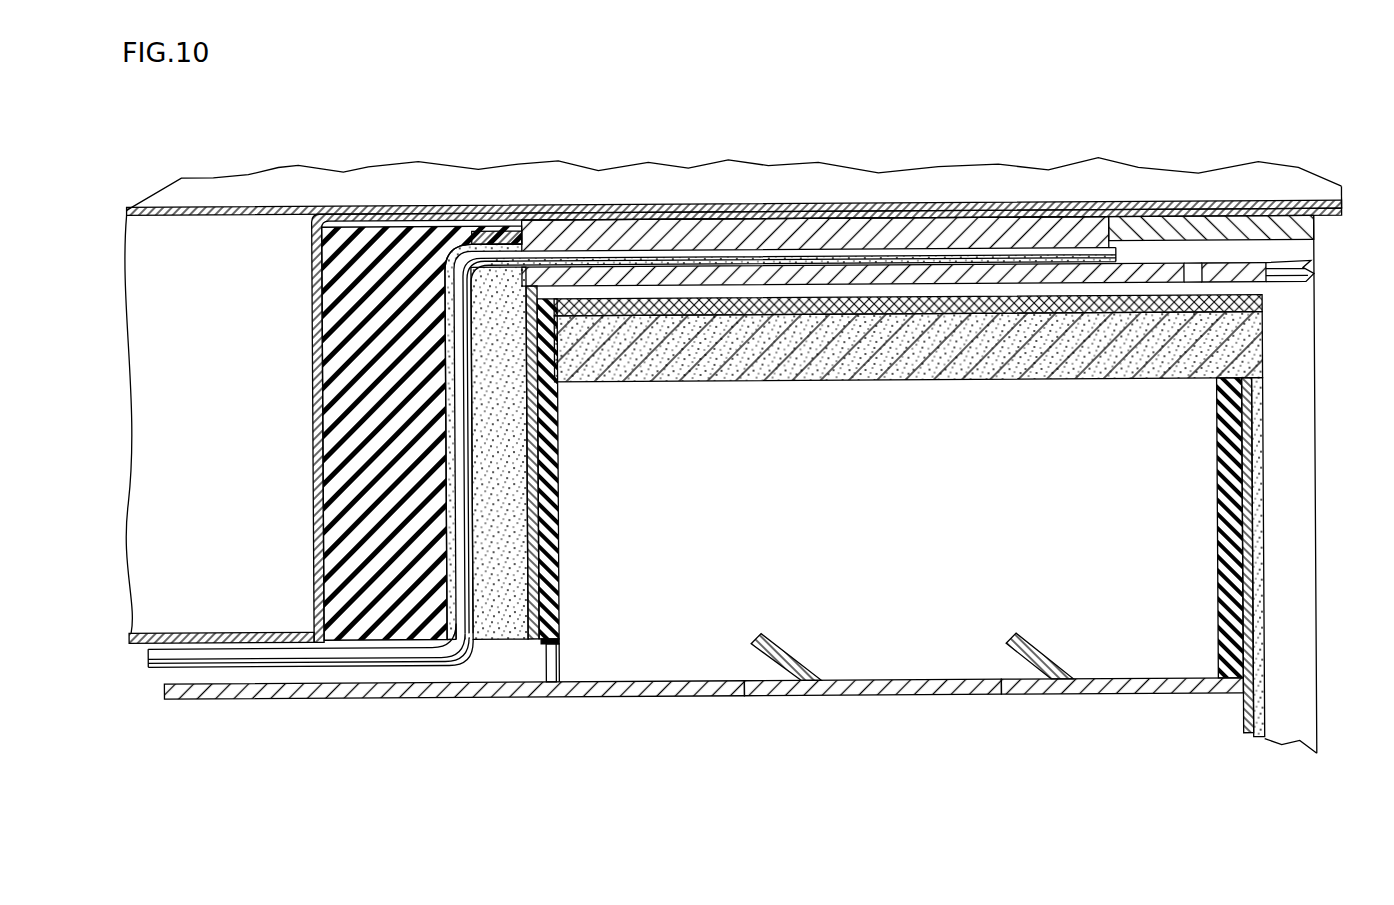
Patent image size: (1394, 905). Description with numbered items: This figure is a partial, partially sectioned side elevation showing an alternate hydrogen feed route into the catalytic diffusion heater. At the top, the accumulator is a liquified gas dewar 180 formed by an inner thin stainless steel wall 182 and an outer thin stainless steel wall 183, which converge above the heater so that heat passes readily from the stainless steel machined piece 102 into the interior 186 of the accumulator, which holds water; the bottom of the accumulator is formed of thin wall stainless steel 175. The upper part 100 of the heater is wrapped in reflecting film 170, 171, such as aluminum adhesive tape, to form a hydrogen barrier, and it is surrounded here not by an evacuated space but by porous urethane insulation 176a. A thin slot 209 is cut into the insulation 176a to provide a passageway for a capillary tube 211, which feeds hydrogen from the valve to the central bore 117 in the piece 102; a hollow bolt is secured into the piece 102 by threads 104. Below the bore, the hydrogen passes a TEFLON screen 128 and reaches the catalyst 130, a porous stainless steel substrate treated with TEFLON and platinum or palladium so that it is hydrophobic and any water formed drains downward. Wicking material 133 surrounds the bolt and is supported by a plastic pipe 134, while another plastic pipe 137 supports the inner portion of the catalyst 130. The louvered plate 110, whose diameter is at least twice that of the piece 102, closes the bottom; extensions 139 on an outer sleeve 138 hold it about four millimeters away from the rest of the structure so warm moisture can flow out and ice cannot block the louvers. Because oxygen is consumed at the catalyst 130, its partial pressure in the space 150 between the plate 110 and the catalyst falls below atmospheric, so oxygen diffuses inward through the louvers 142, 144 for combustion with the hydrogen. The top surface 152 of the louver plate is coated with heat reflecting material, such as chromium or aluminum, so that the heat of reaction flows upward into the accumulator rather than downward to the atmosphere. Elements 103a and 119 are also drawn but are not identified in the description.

The upper part 100 is at (1040, 218).
The stainless steel machined piece 102 is at (770, 240).
The frame side member 103a is at (1298, 474).
The threads 104 is at (1318, 275).
The louvered plate 110 is at (875, 679).
The central bore 117 is at (1152, 250).
The edge seal 119 is at (1233, 231).
The TEFLON screen 128 is at (1263, 302).
The catalyst 130 is at (905, 373).
The wicking material 133 is at (1258, 740).
The plastic pipe 134 is at (1245, 710).
The plastic pipe 137 is at (1217, 538).
The outer sleeve 138 is at (560, 399).
The extensions 139 is at (557, 664).
The louver 142 is at (1040, 650).
The louver 144 is at (785, 658).
The space 150 is at (887, 517).
The top surface 152 is at (655, 681).
The reflecting film 170 is at (548, 665).
The reflecting film 171 is at (545, 649).
The thin wall stainless steel 175 is at (527, 212).
The porous urethane insulation 176a is at (420, 524).
The liquified gas dewar 180 is at (372, 161).
The inner thin stainless steel wall 182 is at (313, 312).
The outer thin stainless steel wall 183 is at (245, 204).
The interior of the accumulator 186 is at (442, 194).
The thin slot 209 is at (500, 478).
The capillary tube 211 is at (548, 583).